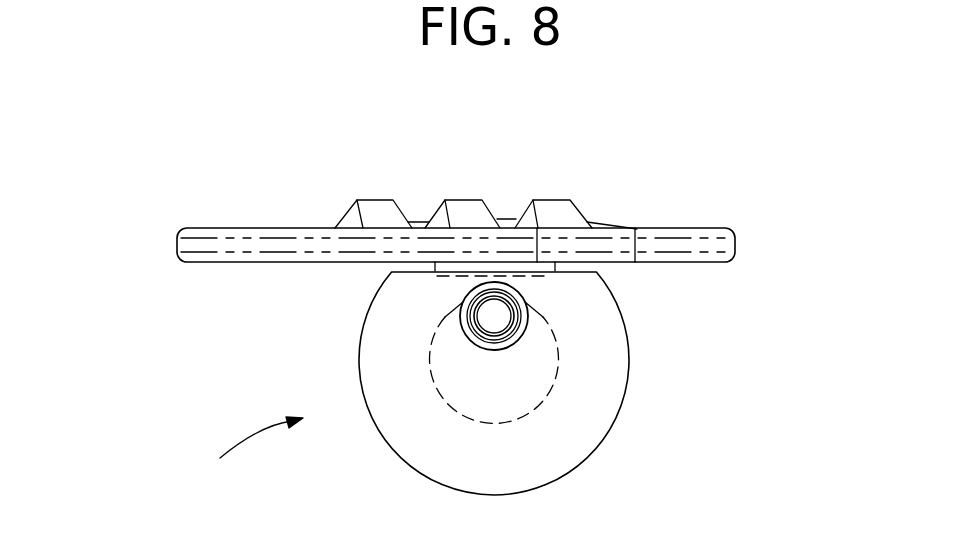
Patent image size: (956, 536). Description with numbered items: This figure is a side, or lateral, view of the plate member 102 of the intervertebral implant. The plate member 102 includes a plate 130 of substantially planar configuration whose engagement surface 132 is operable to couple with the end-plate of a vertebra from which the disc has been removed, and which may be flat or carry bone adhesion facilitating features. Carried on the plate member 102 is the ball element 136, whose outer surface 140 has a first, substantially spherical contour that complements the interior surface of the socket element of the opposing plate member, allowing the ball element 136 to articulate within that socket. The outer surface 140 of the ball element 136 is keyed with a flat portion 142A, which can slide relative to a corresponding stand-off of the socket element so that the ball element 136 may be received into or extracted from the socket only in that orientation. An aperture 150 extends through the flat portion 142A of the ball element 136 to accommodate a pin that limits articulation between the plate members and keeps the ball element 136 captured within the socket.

The plate member 102 is at (513, 100).
The plate 130 is at (177, 250).
The engagement surface 132 is at (702, 228).
The ball element 136 is at (230, 450).
The outer surface 140 is at (427, 457).
The flat portion 142A is at (538, 387).
The aperture 150 is at (497, 311).